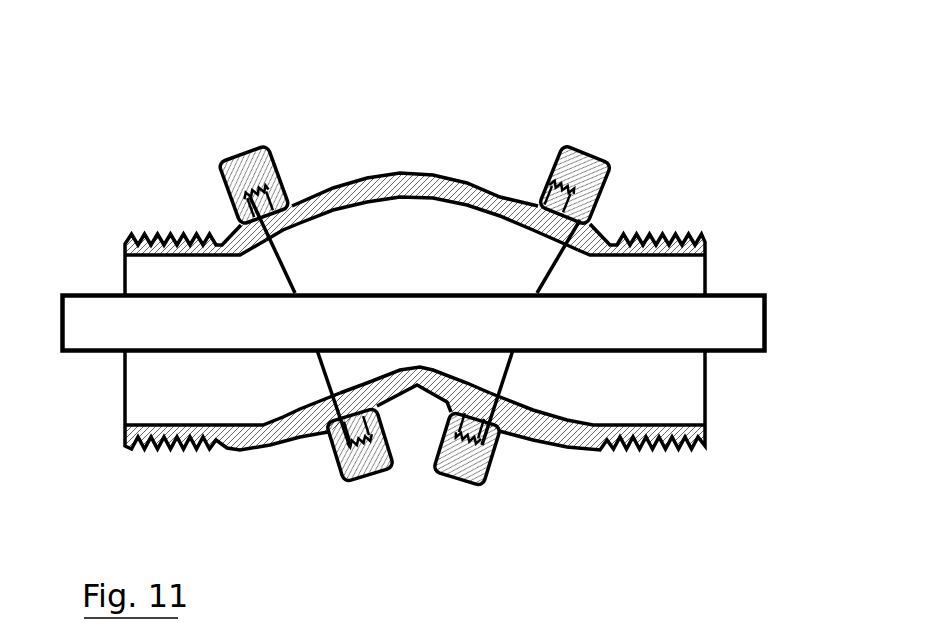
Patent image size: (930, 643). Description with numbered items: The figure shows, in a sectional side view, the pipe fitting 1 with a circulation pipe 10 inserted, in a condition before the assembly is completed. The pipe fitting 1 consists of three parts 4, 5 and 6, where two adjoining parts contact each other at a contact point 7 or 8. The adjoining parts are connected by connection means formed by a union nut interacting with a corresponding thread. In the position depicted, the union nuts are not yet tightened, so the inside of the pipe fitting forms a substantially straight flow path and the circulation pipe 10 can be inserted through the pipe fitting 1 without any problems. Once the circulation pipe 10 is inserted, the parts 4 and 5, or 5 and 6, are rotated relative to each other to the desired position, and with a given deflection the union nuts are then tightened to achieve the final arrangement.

The pipe fitting 1 is at (470, 83).
The first part 4 is at (270, 437).
The middle part 5 is at (437, 387).
The third part 6 is at (557, 433).
The contact point 7 is at (283, 262).
The contact point 8 is at (547, 265).
The circulation pipe 10 is at (735, 292).